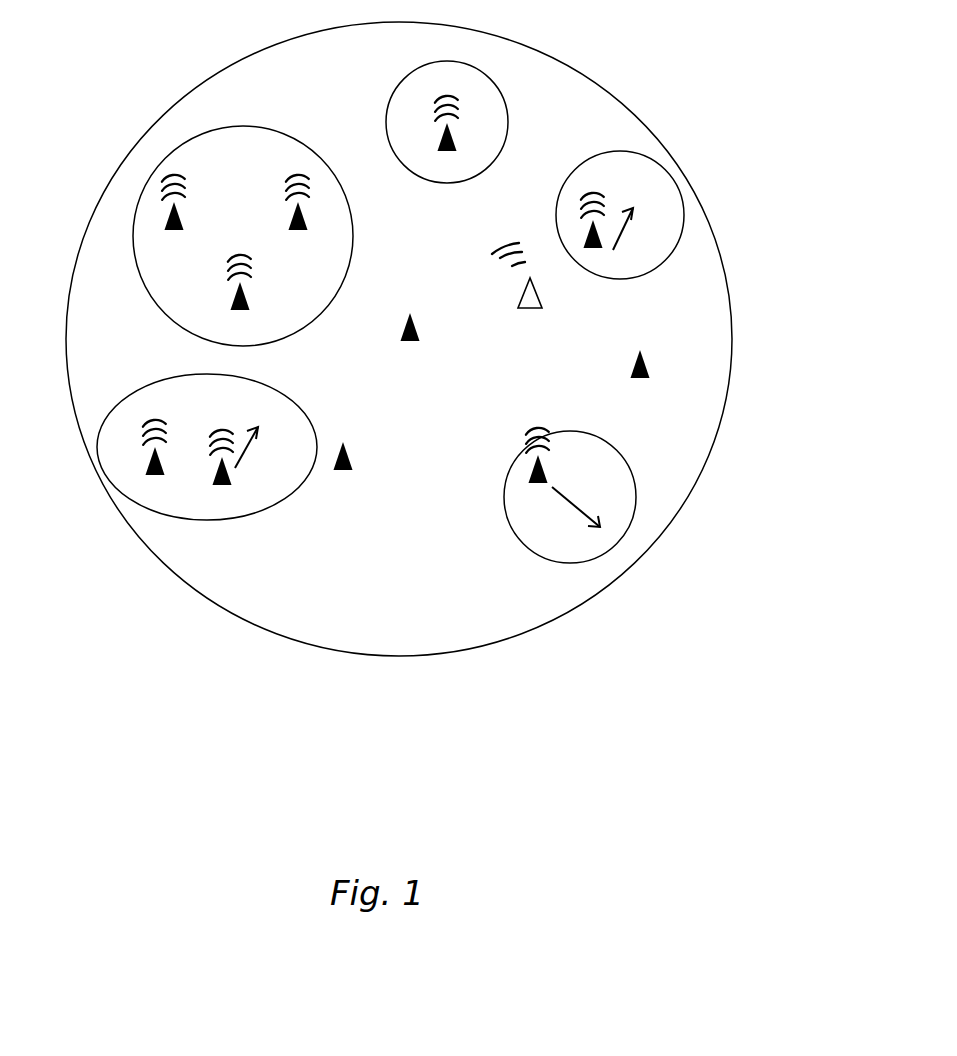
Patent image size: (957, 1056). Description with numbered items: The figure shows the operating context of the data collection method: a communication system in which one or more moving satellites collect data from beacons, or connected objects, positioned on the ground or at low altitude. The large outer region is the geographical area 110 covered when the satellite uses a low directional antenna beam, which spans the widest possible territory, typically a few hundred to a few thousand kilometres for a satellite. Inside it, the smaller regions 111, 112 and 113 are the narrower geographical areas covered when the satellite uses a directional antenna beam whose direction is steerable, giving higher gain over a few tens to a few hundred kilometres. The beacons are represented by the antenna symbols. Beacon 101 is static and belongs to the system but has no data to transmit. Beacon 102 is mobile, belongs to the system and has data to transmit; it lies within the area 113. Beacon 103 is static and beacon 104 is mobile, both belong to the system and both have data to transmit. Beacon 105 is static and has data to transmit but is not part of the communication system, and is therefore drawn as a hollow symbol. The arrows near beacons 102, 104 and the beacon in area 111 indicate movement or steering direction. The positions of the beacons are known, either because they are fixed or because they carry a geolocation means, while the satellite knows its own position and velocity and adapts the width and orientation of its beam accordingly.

The geographical area covered by low directional antenna beam 110 is at (583, 77).
The geographical area covered by directional antenna beam 112 is at (198, 153).
The geographical area covered by directional antenna beam 111 is at (663, 188).
The beacon 105 is at (542, 298).
The beacon 101 is at (653, 370).
The geographical area covered by directional antenna beam 113 is at (623, 510).
The beacon 102 is at (540, 487).
The beacon 103 is at (145, 467).
The beacon 104 is at (217, 483).